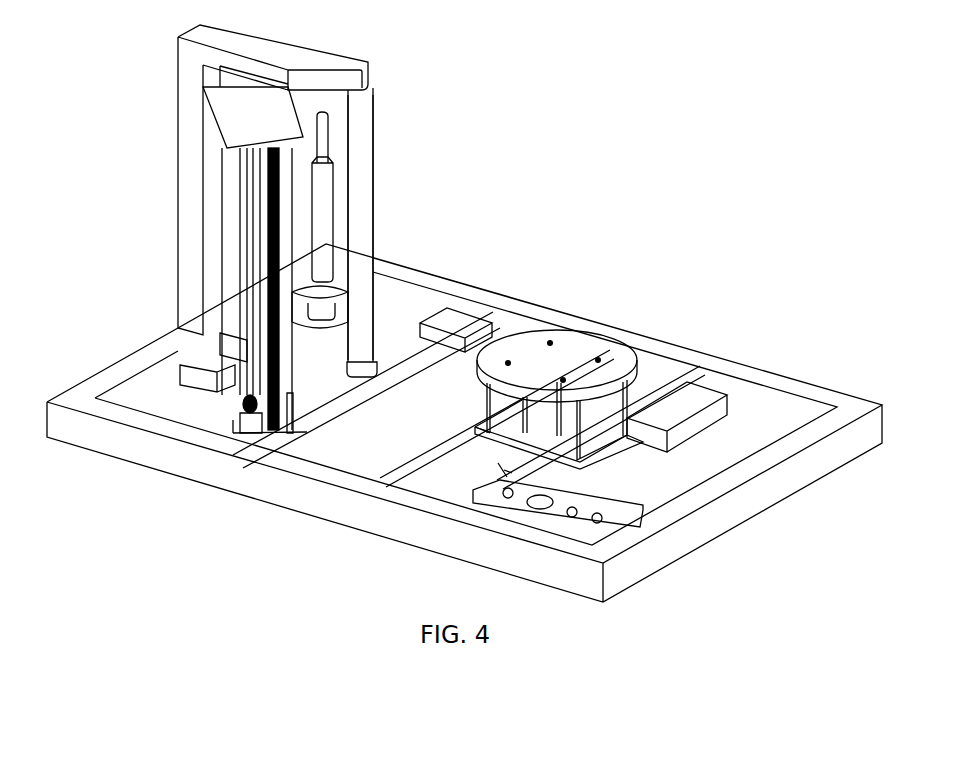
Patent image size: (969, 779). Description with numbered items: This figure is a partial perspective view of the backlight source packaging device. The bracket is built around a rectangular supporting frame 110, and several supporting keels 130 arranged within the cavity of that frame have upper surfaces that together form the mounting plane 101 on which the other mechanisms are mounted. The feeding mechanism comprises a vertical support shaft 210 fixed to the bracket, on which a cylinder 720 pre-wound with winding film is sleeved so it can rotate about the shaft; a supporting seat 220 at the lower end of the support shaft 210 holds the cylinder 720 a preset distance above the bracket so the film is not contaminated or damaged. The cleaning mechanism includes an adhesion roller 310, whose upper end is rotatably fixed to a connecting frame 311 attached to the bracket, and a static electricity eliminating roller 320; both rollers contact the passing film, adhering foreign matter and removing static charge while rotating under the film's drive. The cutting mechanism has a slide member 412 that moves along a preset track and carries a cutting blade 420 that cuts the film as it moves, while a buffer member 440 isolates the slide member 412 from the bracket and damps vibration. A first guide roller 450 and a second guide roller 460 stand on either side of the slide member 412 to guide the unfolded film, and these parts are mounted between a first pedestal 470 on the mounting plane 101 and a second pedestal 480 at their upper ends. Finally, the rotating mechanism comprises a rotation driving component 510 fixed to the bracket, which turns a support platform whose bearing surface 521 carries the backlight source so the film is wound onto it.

The mounting plane 101 is at (430, 330).
The rectangular supporting frame 110 is at (710, 368).
The supporting keel 130 is at (463, 347).
The support shaft 210 is at (323, 127).
The supporting seat 220 is at (340, 276).
The adhesion roller 310 is at (360, 150).
The connecting frame 311 is at (186, 188).
The static electricity eliminating roller 320 is at (237, 264).
The slide member 412 is at (240, 383).
The cutting blade 420 is at (273, 380).
The buffer member 440 is at (243, 405).
The first guide roller 450 is at (257, 317).
The second guide roller 460 is at (285, 413).
The first pedestal 470 is at (263, 425).
The second pedestal 480 is at (228, 100).
The rotation driving component 510 is at (540, 413).
The bearing surface 521 is at (605, 370).
The cylinder 720 is at (323, 218).